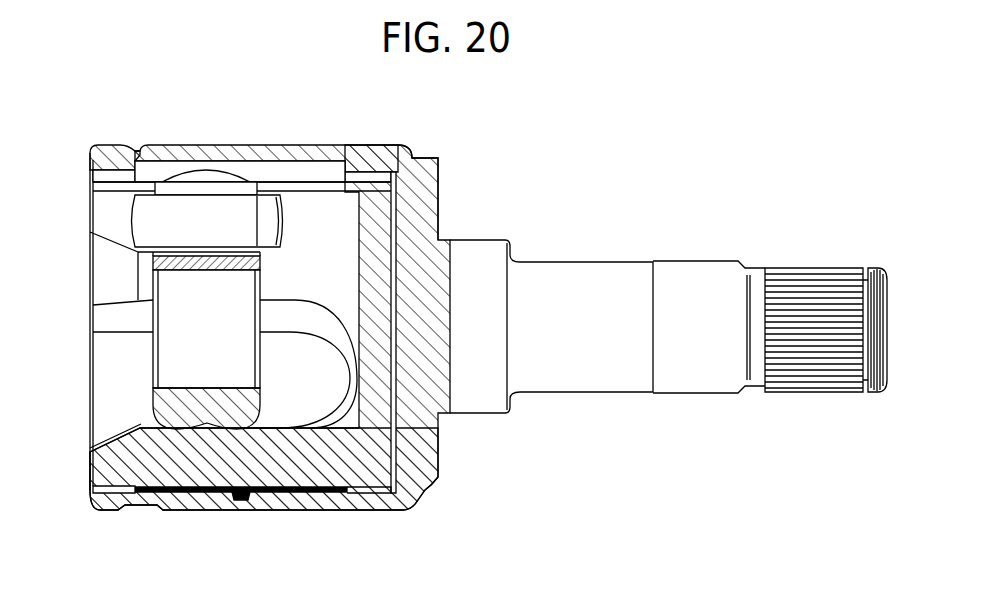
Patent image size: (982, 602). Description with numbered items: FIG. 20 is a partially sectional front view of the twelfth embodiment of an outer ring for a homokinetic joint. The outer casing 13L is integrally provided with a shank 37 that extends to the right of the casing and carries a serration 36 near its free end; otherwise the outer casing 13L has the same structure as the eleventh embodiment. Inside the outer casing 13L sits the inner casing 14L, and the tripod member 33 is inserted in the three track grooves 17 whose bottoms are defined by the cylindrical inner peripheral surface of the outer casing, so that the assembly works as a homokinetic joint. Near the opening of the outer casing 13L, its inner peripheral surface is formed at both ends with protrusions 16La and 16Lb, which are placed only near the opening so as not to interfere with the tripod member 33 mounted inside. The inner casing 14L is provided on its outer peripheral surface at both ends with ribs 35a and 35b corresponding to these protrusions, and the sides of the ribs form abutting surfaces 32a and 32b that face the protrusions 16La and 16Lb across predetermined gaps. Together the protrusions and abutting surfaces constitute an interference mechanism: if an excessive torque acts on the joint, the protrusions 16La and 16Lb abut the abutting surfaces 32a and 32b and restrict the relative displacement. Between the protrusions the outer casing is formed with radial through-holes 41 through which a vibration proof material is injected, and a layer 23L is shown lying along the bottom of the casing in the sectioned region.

The outer casing 13L is at (197, 153).
The inner casing 14L is at (148, 462).
The protrusion 16Lb is at (107, 158).
The protrusion 16La is at (362, 167).
The track groove 17 is at (258, 168).
The abutting surface 32a is at (397, 160).
The abutting surface 32b is at (100, 175).
The tripod member 33 is at (175, 356).
The rib 35a is at (364, 493).
The rib 35b is at (102, 488).
The seal ring 23L is at (185, 492).
The radial through-hole 41 is at (238, 500).
The shank 37 is at (560, 277).
The serration 36 is at (808, 283).